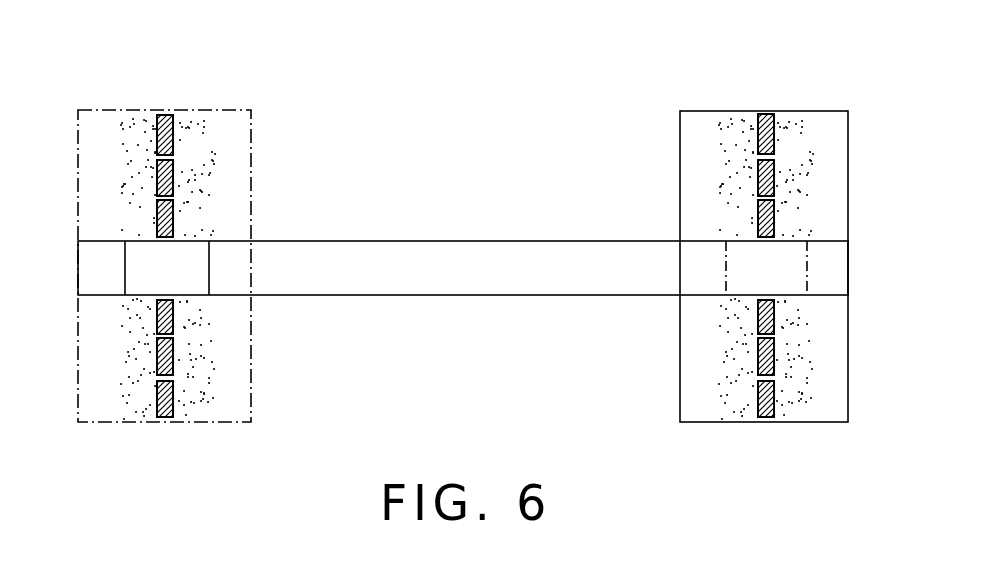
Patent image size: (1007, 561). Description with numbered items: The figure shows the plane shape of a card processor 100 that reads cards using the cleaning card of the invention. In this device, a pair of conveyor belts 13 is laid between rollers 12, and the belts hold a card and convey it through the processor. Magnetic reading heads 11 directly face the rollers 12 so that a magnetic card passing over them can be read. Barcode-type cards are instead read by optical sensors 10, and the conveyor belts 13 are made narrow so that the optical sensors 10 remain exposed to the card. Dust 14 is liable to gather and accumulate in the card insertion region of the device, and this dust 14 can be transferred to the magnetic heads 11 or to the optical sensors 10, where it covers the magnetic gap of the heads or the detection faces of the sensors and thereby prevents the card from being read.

The magnetic head assembly 100 is at (478, 36).
The optical sensor 10 is at (175, 170).
The magnetic reading head 11 is at (146, 110).
The roller 12 is at (123, 270).
The conveyor belt 13 is at (500, 240).
The dust 14 is at (213, 160).